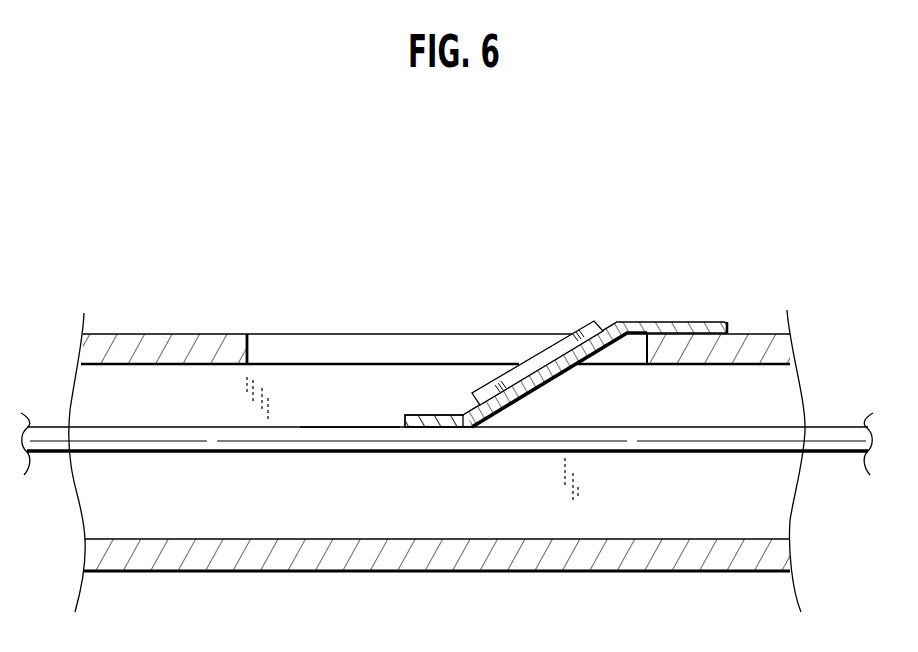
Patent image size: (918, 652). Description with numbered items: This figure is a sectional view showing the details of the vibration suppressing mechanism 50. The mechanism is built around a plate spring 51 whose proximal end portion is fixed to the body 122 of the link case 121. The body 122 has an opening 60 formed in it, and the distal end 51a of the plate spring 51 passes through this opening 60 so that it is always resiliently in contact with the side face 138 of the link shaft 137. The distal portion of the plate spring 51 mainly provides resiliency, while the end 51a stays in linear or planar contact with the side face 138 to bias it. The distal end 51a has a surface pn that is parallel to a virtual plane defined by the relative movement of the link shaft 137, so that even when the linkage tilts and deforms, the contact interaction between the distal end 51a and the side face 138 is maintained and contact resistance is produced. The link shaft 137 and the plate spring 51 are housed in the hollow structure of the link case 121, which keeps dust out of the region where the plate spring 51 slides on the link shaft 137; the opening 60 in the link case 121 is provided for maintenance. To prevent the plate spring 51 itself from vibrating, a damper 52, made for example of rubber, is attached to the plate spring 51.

The link case 121 is at (145, 334).
The body 122 is at (437, 555).
The opening 60 is at (292, 334).
The side face 138 is at (355, 418).
The vibration suppressing mechanism 50 is at (566, 301).
The plate spring 51 is at (697, 320).
The distal end 51a is at (433, 415).
The damper 52 is at (585, 322).
The link shaft 137 is at (842, 425).
The surface pn is at (434, 428).